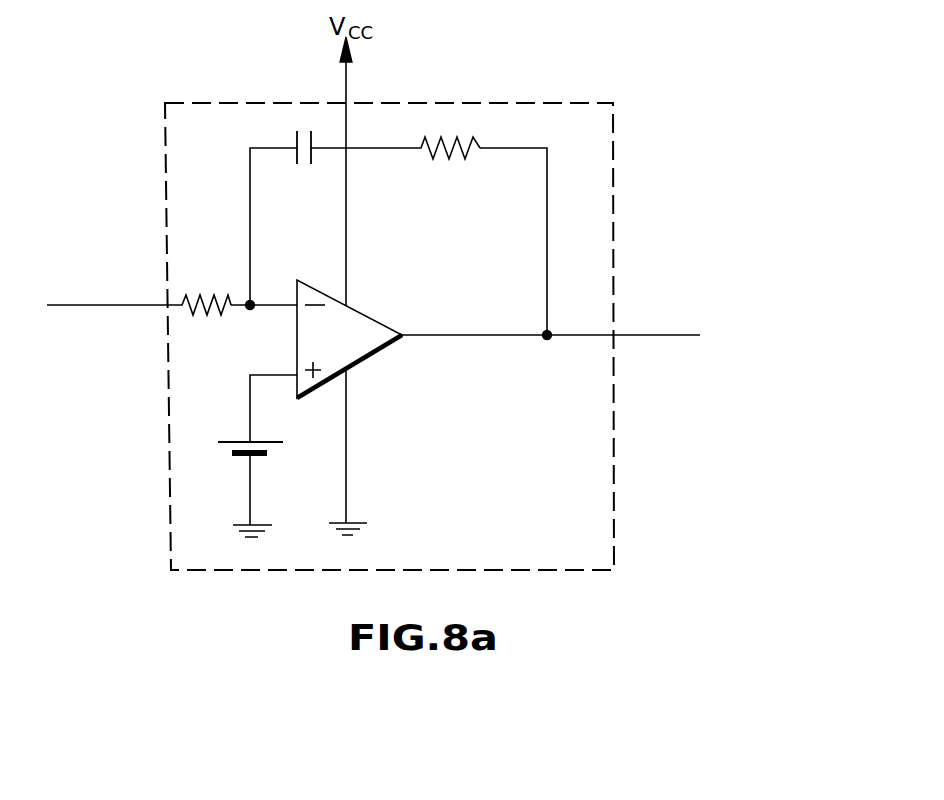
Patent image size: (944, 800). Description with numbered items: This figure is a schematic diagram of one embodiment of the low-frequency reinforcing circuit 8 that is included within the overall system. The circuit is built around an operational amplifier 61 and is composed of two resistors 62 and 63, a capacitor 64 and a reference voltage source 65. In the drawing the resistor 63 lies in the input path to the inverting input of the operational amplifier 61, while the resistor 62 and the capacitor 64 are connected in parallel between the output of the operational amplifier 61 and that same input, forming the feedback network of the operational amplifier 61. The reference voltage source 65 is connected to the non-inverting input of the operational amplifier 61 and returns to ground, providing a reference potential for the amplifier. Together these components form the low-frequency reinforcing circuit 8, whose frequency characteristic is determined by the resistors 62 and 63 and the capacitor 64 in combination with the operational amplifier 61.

The low-frequency reinforcing circuit 8 is at (612, 157).
The operational amplifier 61 is at (368, 352).
The resistor 62 is at (452, 158).
The resistor 63 is at (215, 311).
The capacitor 64 is at (311, 160).
The reference voltage source 65 is at (276, 444).